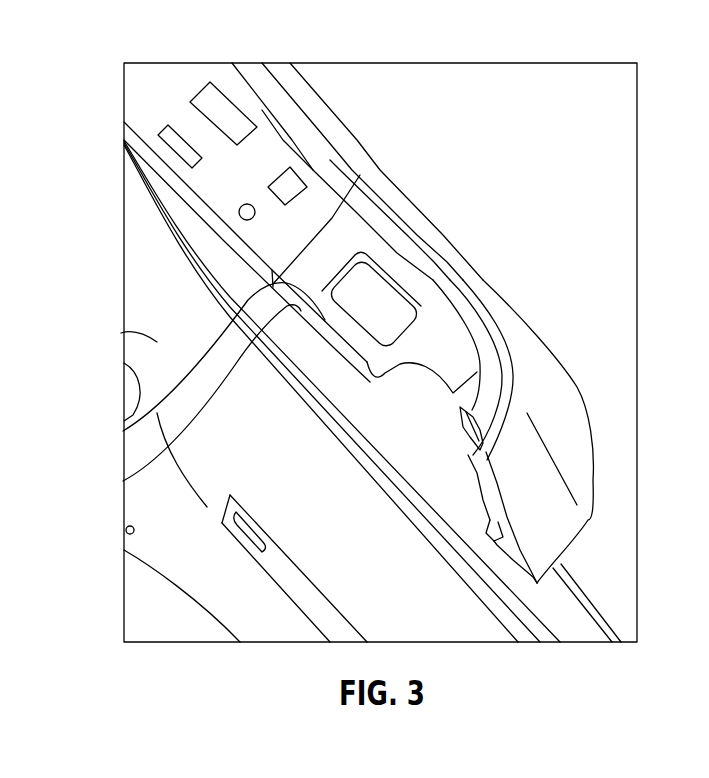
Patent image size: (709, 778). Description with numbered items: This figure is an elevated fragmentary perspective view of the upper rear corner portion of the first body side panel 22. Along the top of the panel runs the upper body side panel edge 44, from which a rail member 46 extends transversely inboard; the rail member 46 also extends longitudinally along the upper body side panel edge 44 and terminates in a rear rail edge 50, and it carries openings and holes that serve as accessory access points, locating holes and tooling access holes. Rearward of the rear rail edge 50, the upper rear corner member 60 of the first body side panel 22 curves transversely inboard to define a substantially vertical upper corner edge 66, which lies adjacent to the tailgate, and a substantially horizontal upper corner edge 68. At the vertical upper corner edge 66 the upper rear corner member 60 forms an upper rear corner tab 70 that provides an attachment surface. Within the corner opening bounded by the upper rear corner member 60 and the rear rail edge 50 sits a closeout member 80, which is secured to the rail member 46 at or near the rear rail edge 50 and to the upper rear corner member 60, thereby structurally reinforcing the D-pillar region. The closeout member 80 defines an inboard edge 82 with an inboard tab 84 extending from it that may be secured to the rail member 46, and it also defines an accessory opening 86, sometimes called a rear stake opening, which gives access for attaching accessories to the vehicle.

The first body side panel 22 is at (121, 338).
The upper body side panel edge 44 is at (262, 110).
The rail member 46 is at (207, 171).
The rear rail edge 50 is at (331, 218).
The upper rear corner member 60 is at (587, 402).
The vertical upper corner edge 66 is at (490, 483).
The horizontal upper corner edge 68 is at (467, 347).
The upper rear corner tab 70 is at (490, 500).
The closeout member 80 is at (343, 237).
The inboard edge 82 is at (123, 431).
The inboard tab 84 is at (123, 481).
The accessory opening 86 is at (403, 290).